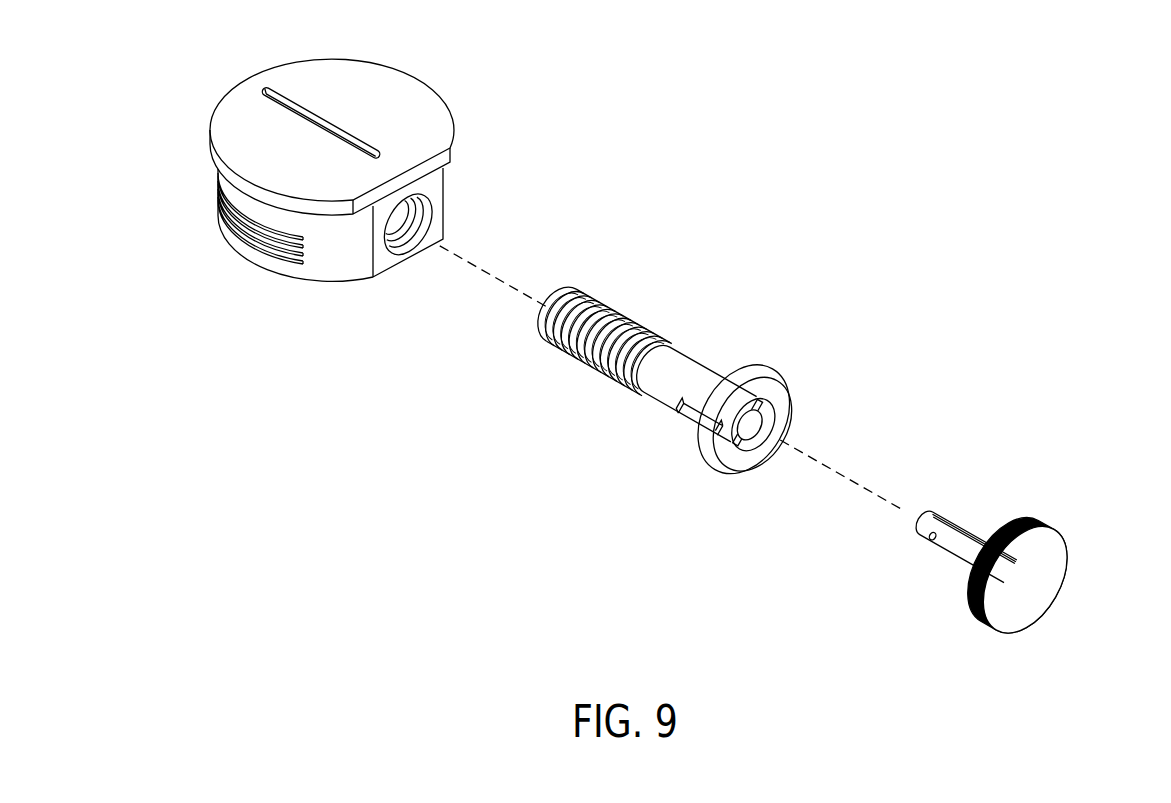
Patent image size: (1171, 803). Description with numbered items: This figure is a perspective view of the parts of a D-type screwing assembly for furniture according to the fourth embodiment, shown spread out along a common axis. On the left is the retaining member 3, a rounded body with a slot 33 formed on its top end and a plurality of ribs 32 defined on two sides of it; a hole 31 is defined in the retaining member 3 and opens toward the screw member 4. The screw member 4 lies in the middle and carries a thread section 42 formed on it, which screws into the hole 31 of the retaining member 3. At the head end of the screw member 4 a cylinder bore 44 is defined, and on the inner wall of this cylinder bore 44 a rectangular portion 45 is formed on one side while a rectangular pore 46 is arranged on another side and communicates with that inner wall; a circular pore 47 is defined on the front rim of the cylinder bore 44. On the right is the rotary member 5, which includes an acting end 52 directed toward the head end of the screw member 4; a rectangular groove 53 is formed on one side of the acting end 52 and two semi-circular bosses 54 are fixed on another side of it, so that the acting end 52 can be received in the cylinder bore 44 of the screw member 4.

The retaining member 3 is at (414, 210).
The hole 31 is at (417, 203).
The ribs 32 is at (283, 243).
The slot 33 is at (317, 117).
The screw member 4 is at (672, 362).
The thread section 42 is at (632, 314).
The cylinder bore 44 is at (768, 437).
The rectangular portion 45 is at (752, 405).
The rectangular pore 46 is at (695, 418).
The circular pore 47 is at (752, 440).
The rotary member 5 is at (989, 500).
The acting end 52 is at (932, 508).
The rectangular groove 53 is at (957, 525).
The semi-circular bosses 54 is at (932, 544).